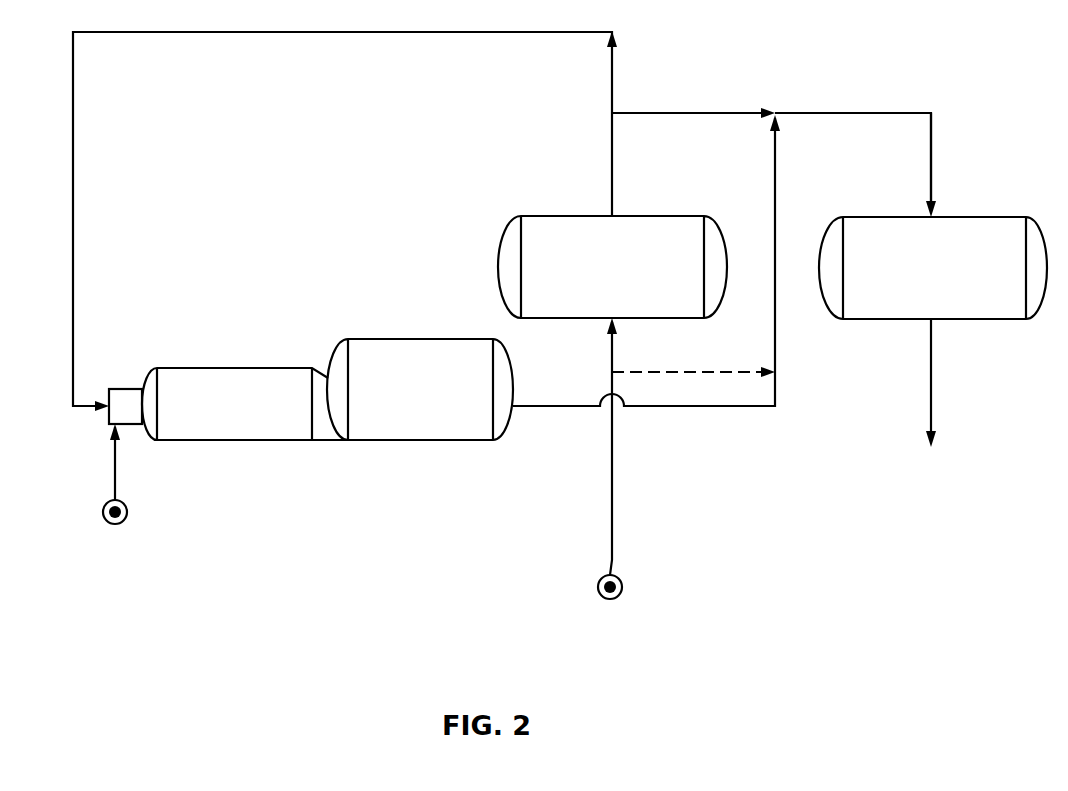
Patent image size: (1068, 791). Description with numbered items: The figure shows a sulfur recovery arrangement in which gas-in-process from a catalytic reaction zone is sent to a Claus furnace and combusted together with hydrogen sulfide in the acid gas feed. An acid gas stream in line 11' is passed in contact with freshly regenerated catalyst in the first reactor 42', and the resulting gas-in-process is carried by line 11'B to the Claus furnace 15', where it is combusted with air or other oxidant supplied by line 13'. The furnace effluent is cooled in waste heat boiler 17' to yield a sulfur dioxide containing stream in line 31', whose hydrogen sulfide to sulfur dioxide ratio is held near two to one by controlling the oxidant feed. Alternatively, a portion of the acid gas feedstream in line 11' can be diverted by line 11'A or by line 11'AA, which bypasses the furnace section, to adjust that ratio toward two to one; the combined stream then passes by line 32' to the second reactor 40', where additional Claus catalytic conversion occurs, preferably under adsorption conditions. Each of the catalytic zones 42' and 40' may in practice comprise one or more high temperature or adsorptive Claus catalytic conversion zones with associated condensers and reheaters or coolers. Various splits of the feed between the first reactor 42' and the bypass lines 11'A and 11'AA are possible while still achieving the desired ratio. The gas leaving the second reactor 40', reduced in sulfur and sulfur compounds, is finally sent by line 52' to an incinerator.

The acid gas stream line 11' is at (625, 482).
The acid gas diversion line 11'A is at (771, 137).
The gas-in-process line 11'B is at (345, 221).
The acid gas bypass line 11'AA is at (693, 357).
The air line 13' is at (94, 488).
The Claus furnace 15' is at (228, 419).
The waste heat boiler 17' is at (420, 405).
The sulfur dioxide containing stream line 31' is at (646, 284).
The feed line to reactor R2 32' is at (961, 165).
The reactor R2 40' is at (933, 250).
The reactor R1 42' is at (633, 260).
The incinerator line 52' is at (929, 406).